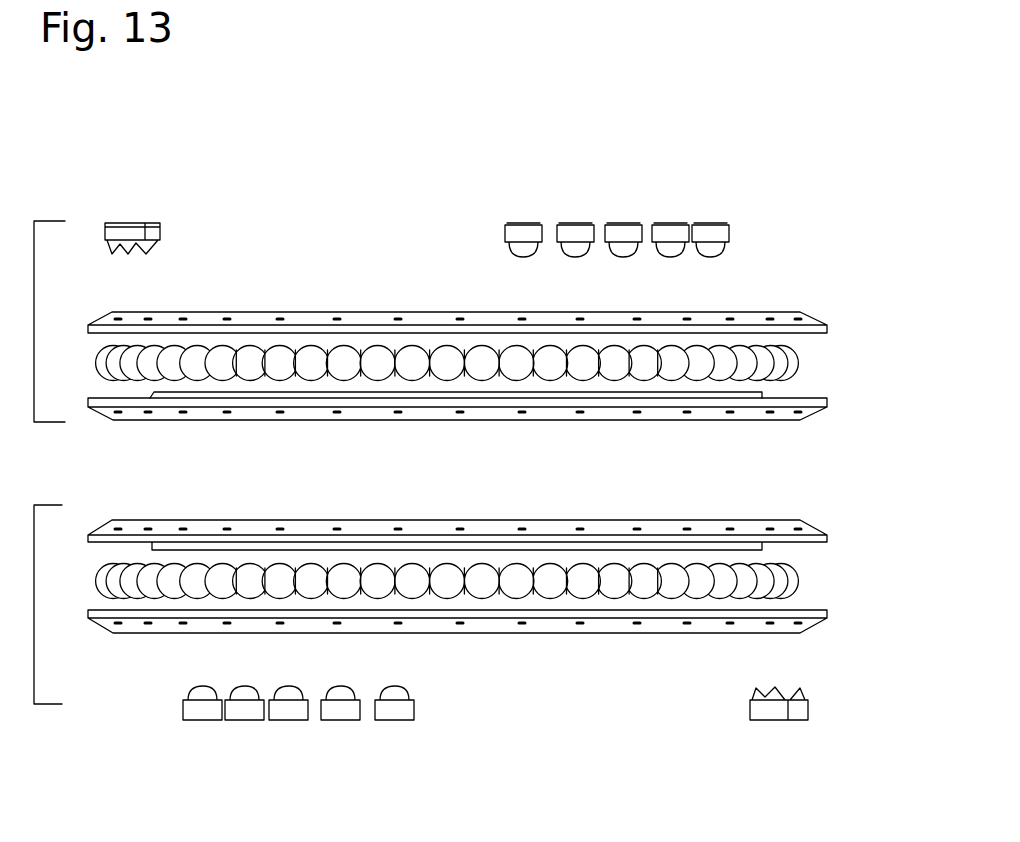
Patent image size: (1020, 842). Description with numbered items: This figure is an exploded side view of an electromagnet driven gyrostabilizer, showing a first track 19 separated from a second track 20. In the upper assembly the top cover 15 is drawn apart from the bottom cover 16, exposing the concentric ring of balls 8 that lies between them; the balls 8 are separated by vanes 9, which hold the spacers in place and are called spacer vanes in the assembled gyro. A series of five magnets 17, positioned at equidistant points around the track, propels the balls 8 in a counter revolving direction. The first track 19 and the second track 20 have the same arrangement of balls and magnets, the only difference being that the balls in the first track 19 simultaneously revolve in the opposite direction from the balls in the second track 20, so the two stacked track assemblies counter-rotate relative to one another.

The balls 8 is at (788, 362).
The vanes 9 is at (463, 351).
The top cover 15 is at (303, 312).
The bottom cover 16 is at (303, 420).
The magnets 17 is at (525, 222).
The first track 19 is at (52, 221).
The second track 20 is at (43, 704).